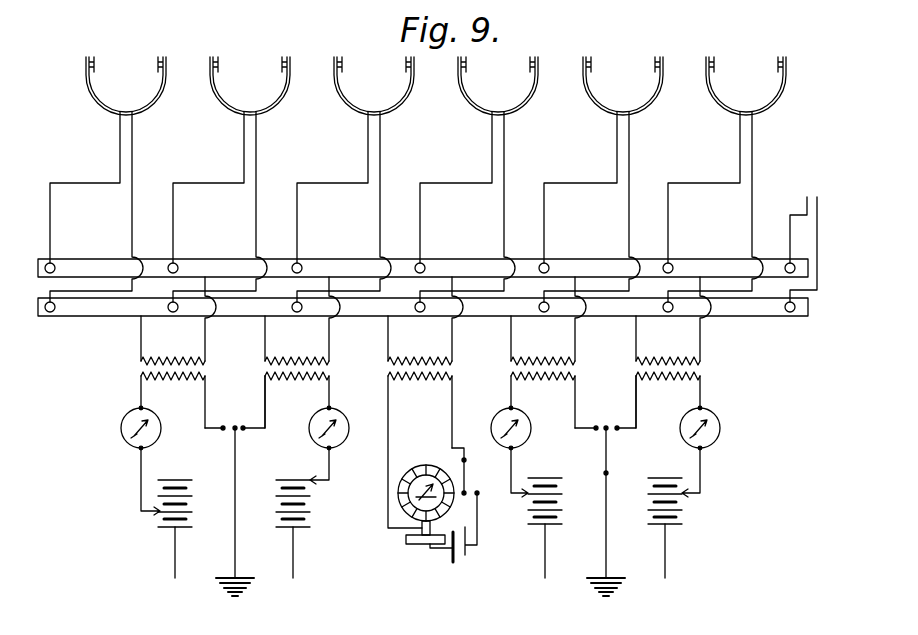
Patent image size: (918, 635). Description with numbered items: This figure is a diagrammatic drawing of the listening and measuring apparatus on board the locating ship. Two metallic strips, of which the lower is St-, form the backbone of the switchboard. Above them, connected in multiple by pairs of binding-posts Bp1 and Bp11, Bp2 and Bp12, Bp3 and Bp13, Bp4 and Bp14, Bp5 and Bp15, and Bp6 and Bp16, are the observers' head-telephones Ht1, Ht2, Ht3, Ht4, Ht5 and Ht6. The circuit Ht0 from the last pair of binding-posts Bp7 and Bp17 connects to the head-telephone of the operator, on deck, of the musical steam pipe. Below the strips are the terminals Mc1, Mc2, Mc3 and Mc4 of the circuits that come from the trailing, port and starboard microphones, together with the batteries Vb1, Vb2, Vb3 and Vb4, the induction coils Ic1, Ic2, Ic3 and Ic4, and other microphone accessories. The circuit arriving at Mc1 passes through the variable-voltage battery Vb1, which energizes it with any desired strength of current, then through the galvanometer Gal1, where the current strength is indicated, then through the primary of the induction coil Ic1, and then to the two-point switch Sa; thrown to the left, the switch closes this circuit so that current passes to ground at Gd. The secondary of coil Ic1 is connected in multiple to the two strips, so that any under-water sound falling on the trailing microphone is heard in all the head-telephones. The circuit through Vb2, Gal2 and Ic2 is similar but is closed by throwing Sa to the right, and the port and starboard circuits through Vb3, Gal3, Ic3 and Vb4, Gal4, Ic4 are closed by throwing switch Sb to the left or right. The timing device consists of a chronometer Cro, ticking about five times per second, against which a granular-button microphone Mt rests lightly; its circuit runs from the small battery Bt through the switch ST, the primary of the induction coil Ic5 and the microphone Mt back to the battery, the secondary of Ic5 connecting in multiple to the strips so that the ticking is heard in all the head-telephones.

The observer's head-telephone Ht1 is at (108, 179).
The observer's head-telephone Ht2 is at (231, 179).
The observer's head-telephone Ht3 is at (355, 179).
The observer's head-telephone Ht4 is at (479, 179).
The observer's head-telephone Ht5 is at (603, 179).
The observer's head-telephone Ht6 is at (727, 179).
The head-telephone circuit of the steam pipe operator Ht0 is at (801, 240).
The binding-post Bp1 is at (64, 255).
The binding-post Bp2 is at (188, 255).
The binding-post Bp3 is at (312, 255).
The binding-post Bp4 is at (436, 255).
The binding-post Bp5 is at (560, 255).
The binding-post Bp6 is at (684, 255).
The binding-post Bp7 is at (776, 253).
The binding-post Bp11 is at (60, 324).
The binding-post Bp12 is at (170, 321).
The binding-post Bp13 is at (293, 321).
The binding-post Bp14 is at (413, 321).
The binding-post Bp15 is at (538, 321).
The binding-post Bp16 is at (661, 321).
The binding-post Bp17 is at (780, 322).
The metallic strip St- is at (423, 316).
The induction coil Ic1 is at (178, 352).
The induction coil Ic2 is at (302, 352).
The induction coil Ic3 is at (548, 352).
The induction coil Ic4 is at (673, 352).
The induction coil Ic5 is at (425, 402).
The galvanometer Gal1 is at (110, 460).
The galvanometer Gal2 is at (303, 445).
The galvanometer Gal3 is at (536, 451).
The galvanometer Gal4 is at (720, 451).
The two-point switch Sa is at (224, 418).
The two-point switch Sb is at (609, 425).
The switch ST is at (473, 471).
The chronometer Cro is at (423, 480).
The granular-button microphone Mt is at (415, 542).
The small battery Bt is at (458, 541).
The variable-voltage battery Vb1 is at (193, 505).
The variable-voltage battery Vb2 is at (275, 505).
The variable-voltage battery Vb3 is at (562, 501).
The variable-voltage battery Vb4 is at (646, 501).
The microphone circuit terminal Mc1 is at (168, 571).
The microphone circuit terminal Mc2 is at (288, 571).
The microphone circuit terminal Mc3 is at (538, 569).
The microphone circuit terminal Mc4 is at (668, 569).
The ground Gd is at (419, 529).